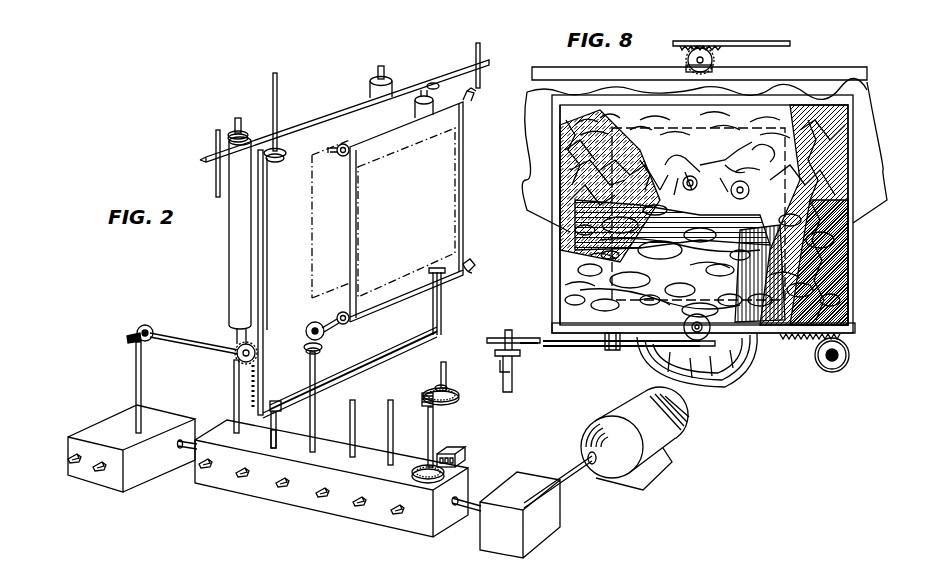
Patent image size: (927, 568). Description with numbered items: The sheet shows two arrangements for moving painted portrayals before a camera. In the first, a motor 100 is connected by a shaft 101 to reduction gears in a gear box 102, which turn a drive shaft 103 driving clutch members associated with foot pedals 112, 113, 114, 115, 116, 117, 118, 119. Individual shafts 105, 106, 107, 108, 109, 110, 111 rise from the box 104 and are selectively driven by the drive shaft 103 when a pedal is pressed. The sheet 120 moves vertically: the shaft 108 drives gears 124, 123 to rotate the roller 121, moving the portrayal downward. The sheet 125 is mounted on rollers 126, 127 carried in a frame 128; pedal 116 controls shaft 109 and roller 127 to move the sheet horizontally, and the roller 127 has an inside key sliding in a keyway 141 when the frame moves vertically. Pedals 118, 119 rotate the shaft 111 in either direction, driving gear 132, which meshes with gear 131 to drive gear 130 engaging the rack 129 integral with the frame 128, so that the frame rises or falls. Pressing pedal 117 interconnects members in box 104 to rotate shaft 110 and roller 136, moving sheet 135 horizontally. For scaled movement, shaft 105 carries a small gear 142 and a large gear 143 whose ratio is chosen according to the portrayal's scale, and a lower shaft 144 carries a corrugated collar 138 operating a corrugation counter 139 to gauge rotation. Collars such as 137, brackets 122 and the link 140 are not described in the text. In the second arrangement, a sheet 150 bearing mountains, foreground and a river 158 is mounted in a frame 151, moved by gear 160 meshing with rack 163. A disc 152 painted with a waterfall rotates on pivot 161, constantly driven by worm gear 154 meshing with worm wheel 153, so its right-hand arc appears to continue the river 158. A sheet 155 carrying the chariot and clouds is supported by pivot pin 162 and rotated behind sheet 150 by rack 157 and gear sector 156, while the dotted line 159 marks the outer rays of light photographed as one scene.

In FIG. 2, the motor 100 is at (598, 420).
In FIG. 2, the shaft 101 is at (570, 470).
In FIG. 2, the gear box 102 is at (548, 525).
In FIG. 2, the drive shaft 103 is at (464, 498).
In FIG. 2, the box 104 is at (431, 526).
In FIG. 2, the shaft 105 is at (441, 374).
In FIG. 2, the shaft 106 is at (393, 438).
In FIG. 2, the shaft 107 is at (355, 428).
In FIG. 2, the shaft 108 is at (315, 420).
In FIG. 2, the shaft 109 is at (276, 420).
In FIG. 2, the shaft 110 is at (234, 395).
In FIG. 2, the shaft 111 is at (141, 370).
In FIG. 2, the foot pedal 112 is at (396, 517).
In FIG. 2, the foot pedal 113 is at (358, 508).
In FIG. 2, the foot pedal 114 is at (321, 500).
In FIG. 2, the foot pedal 115 is at (281, 490).
In FIG. 2, the foot pedal 116 is at (240, 480).
In FIG. 2, the foot pedal 117 is at (203, 470).
In FIG. 2, the foot pedal 118 is at (96, 472).
In FIG. 2, the foot pedal 119 is at (66, 458).
In FIG. 2, the sheet 120 is at (463, 233).
In FIG. 2, the roller 121 is at (472, 265).
In FIG. 2, the upper bracket 122 is at (472, 102).
In FIG. 2, the gear 123 is at (325, 336).
In FIG. 2, the gear 124 is at (320, 351).
In FIG. 2, the sheet 125 is at (440, 302).
In FIG. 2, the roller 126 is at (442, 318).
In FIG. 2, the roller 127 is at (276, 400).
In FIG. 2, the frame 128 is at (325, 120).
In FIG. 2, the rack 129 is at (250, 375).
In FIG. 2, the gear 130 is at (236, 348).
In FIG. 2, the gear 131 is at (146, 325).
In FIG. 2, the gear 132 is at (127, 337).
In FIG. 2, the sheet 135 is at (270, 128).
In FIG. 2, the roller 136 is at (233, 128).
In FIG. 2, the collar 137 is at (378, 74).
In FIG. 2, the corrugated collar 138 is at (457, 462).
In FIG. 2, the corrugation counter 139 is at (462, 452).
In FIG. 2, the link bar 140 is at (172, 333).
In FIG. 2, the keyway 141 is at (271, 435).
In FIG. 2, the small gear 142 is at (422, 400).
In FIG. 2, the large gear 143 is at (452, 392).
In FIG. 2, the shaft 144 is at (433, 436).
In FIG. 8, the sheet 150 is at (851, 268).
In FIG. 8, the frame 151 is at (855, 330).
In FIG. 8, the disc 152 is at (740, 346).
In FIG. 8, the worm wheel 153 is at (683, 325).
In FIG. 8, the worm gear 154 is at (742, 370).
In FIG. 8, the sheet 155 is at (850, 82).
In FIG. 8, the gear sector 156 is at (716, 60).
In FIG. 8, the rack 157 is at (752, 41).
In FIG. 8, the river 158 is at (590, 262).
In FIG. 8, the dotted line 159 is at (770, 142).
In FIG. 8, the gear 160 is at (830, 372).
In FIG. 8, the pivot 161 is at (690, 342).
In FIG. 8, the pivot pin 162 is at (700, 56).
In FIG. 8, the rack 163 is at (813, 342).